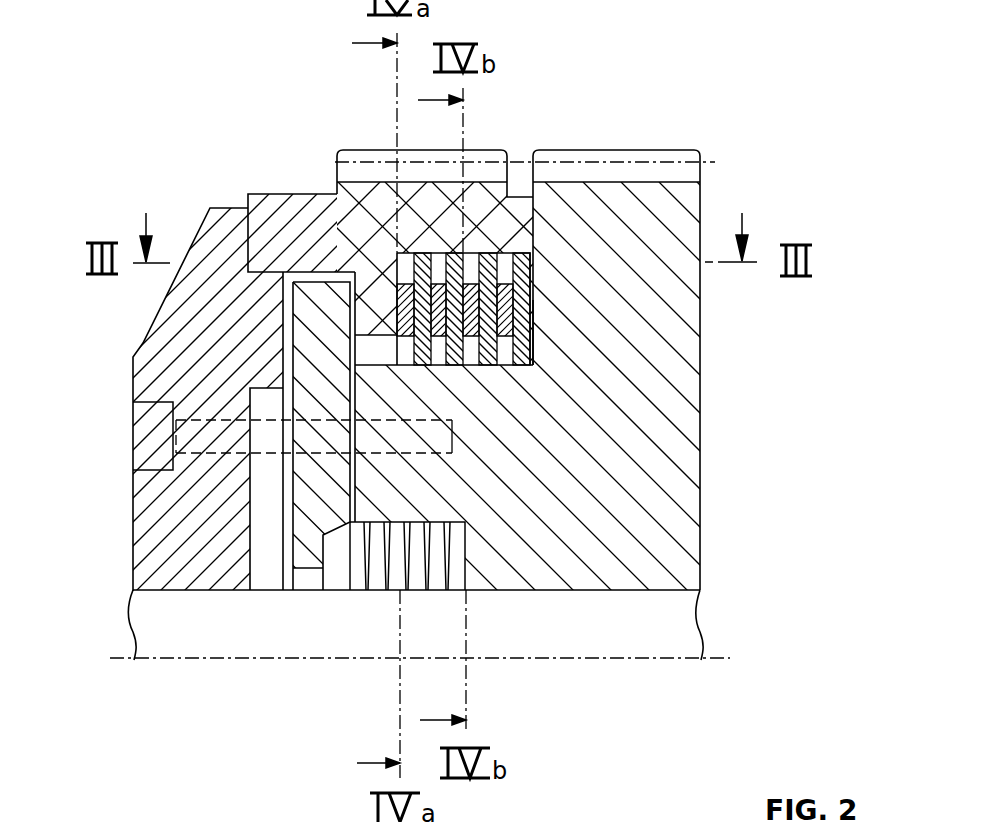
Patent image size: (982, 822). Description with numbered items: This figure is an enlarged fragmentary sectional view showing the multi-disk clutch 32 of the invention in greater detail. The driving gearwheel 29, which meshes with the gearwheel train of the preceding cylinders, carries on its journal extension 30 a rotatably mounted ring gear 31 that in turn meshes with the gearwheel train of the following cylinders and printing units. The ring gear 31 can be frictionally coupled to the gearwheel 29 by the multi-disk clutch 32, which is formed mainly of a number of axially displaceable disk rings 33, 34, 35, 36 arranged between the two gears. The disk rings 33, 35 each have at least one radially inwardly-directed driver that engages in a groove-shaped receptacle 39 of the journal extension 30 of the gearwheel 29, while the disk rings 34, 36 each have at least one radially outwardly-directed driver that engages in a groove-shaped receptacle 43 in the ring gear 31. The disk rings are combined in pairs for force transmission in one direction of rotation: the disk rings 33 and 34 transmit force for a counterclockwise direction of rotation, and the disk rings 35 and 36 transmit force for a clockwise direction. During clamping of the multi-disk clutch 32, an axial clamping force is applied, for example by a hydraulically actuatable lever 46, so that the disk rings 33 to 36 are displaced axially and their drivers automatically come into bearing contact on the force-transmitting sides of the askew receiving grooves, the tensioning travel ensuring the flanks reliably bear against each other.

The driving gearwheel 29 is at (618, 197).
The journal extension 30 is at (377, 483).
The ring gear 31 is at (440, 172).
The multi-disk clutch 32 is at (553, 337).
The disk ring 33 is at (400, 262).
The disk ring 34 is at (422, 280).
The disk ring 35 is at (488, 258).
The disk ring 36 is at (505, 258).
The groove-shaped receptacle 39 is at (370, 355).
The groove-shaped receptacle 43 is at (445, 258).
The hydraulically actuatable lever 46 is at (327, 482).